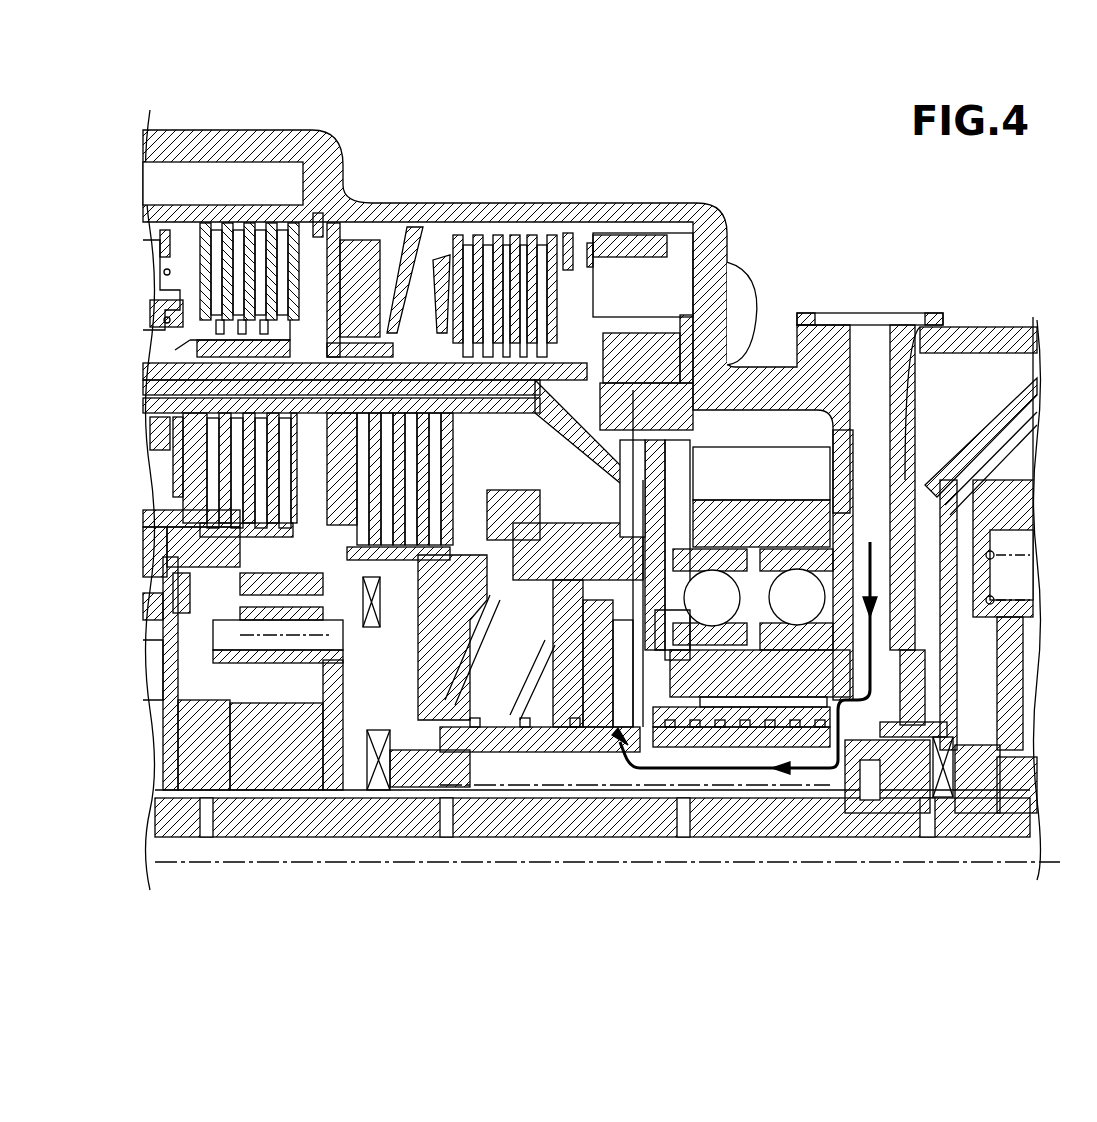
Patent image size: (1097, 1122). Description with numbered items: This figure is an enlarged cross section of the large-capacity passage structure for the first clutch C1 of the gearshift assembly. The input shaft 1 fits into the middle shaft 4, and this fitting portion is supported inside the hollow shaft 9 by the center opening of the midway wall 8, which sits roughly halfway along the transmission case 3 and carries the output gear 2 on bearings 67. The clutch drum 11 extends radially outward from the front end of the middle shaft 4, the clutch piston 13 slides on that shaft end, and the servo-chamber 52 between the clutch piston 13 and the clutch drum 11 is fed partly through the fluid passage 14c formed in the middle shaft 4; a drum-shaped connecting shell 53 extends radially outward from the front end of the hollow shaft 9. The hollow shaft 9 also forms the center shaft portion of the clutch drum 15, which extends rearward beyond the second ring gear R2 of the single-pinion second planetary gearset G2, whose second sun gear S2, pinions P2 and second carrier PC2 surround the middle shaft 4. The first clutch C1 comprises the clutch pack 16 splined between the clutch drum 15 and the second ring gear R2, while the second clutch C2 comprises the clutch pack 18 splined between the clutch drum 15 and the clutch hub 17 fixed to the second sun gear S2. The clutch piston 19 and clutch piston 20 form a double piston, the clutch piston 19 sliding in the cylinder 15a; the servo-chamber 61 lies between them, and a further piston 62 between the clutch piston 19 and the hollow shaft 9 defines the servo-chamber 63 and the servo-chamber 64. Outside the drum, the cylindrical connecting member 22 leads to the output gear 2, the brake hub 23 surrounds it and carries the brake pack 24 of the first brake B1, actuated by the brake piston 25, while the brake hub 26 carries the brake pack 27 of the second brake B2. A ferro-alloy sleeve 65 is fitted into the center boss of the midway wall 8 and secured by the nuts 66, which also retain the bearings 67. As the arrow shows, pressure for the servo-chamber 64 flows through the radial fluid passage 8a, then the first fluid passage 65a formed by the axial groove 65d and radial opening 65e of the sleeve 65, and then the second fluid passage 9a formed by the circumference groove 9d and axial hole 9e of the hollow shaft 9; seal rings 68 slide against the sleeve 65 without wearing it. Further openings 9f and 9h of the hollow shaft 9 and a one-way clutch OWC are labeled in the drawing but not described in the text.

The input shaft 1 is at (1035, 825).
The output gear 2 is at (733, 465).
The transmission case 3 is at (700, 212).
The middle shaft 4 is at (710, 823).
The midway wall 8 is at (905, 393).
The radial fluid passage 8a is at (855, 367).
The hollow shaft 9 is at (900, 777).
The second fluid passage 9a is at (815, 890).
The circumference groove 9d is at (853, 747).
The axial hole 9e is at (820, 813).
The pump body passage 9f is at (713, 748).
The oil passage 9h is at (660, 740).
The clutch drum 11 is at (968, 513).
The clutch piston 13 is at (1000, 527).
The fluid passage 14c is at (985, 780).
The clutch drum 15 is at (498, 400).
The cylinder 15a is at (730, 348).
The clutch pack 16 is at (297, 490).
The clutch hub 17 is at (430, 597).
The clutch pack 18 is at (480, 517).
The clutch piston 19 is at (640, 423).
The clutch piston 20 is at (610, 495).
The cylindrical connecting member 22 is at (435, 330).
The brake hub 23 is at (395, 320).
The brake pack 24 is at (510, 245).
The brake piston 25 is at (385, 255).
The brake hub 26 is at (275, 372).
The brake pack 27 is at (247, 222).
The servo-chamber 52 is at (985, 650).
The connecting shell 53 is at (1003, 413).
The servo-chamber 61 is at (507, 720).
The piston 62 is at (607, 720).
The servo-chamber 63 is at (563, 720).
The servo-chamber 64 is at (627, 680).
The sleeve 65 is at (715, 685).
The first fluid passage 65a is at (858, 262).
The axial groove 65d is at (773, 513).
The radial opening 65e is at (797, 513).
The nuts 66 is at (693, 580).
The bearings 67 is at (820, 592).
The seal rings 68 is at (920, 724).
The first brake B1 is at (532, 232).
The second brake B2 is at (263, 220).
The first clutch C1 is at (182, 497).
The second clutch C2 is at (410, 410).
The one-way clutch OWC is at (718, 290).
The second sun gear S2 is at (190, 673).
The second pinion gear P2 is at (273, 727).
The second planetary gearset G2 is at (297, 795).
The second carrier PC2 is at (340, 680).
The second ring gear R2 is at (215, 560).